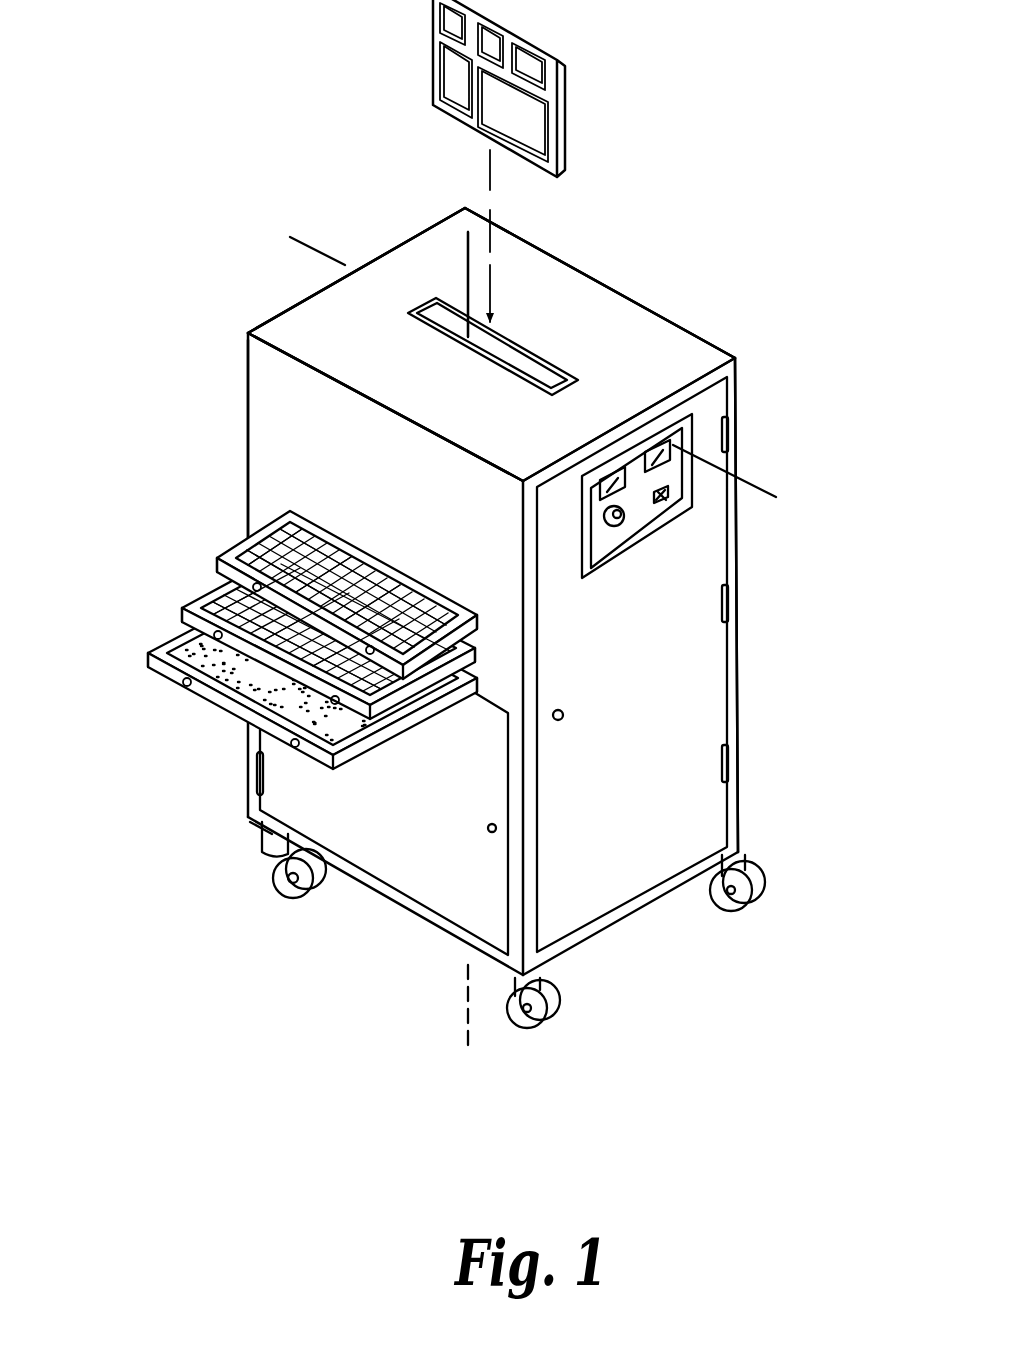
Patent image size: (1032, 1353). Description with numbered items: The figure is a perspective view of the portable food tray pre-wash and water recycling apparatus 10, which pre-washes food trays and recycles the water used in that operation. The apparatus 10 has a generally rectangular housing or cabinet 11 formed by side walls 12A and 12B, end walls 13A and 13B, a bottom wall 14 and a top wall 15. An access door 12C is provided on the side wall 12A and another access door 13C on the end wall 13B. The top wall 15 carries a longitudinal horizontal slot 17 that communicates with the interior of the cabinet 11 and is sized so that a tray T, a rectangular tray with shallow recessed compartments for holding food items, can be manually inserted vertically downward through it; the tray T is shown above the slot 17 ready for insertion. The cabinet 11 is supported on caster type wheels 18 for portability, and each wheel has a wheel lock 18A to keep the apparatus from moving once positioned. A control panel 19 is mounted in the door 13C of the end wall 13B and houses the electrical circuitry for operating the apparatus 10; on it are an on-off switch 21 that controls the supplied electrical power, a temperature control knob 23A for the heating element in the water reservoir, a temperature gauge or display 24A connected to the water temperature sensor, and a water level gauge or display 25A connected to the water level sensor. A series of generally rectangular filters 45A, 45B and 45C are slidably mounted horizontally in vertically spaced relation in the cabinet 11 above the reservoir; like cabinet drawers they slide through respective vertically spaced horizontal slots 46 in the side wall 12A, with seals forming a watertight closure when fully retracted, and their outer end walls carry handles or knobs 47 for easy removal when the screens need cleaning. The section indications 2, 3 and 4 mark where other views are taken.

The portable food tray pre-wash and water recycling apparatus 10 is at (686, 281).
The housing or cabinet 11 is at (240, 412).
The side wall 12A is at (392, 483).
The side wall 12B is at (700, 352).
The access door 12C is at (415, 818).
The end wall 13A is at (278, 320).
The end wall 13B is at (745, 652).
The access door 13C is at (665, 763).
The bottom wall 14 is at (393, 900).
The top wall 15 is at (500, 427).
The longitudinal horizontal slot 17 is at (545, 358).
The caster type wheels 18 is at (298, 902).
The wheel lock 18A is at (288, 880).
The control panel 19 is at (645, 537).
The on-off switch 21 is at (670, 497).
The temperature control knob 23A is at (614, 528).
The temperature gauge or display 24A is at (609, 482).
The water level gauge or display 25A is at (656, 440).
The filter 45A is at (238, 548).
The filter 45B is at (208, 604).
The filter 45C is at (168, 643).
The horizontal slots 46 is at (374, 572).
The handle or knobs 47 is at (290, 745).
The tray T is at (578, 107).
The section line 2- 2 is at (462, 266).
The section line 3- 3 is at (480, 264).
The section line 4- 4 is at (314, 238).